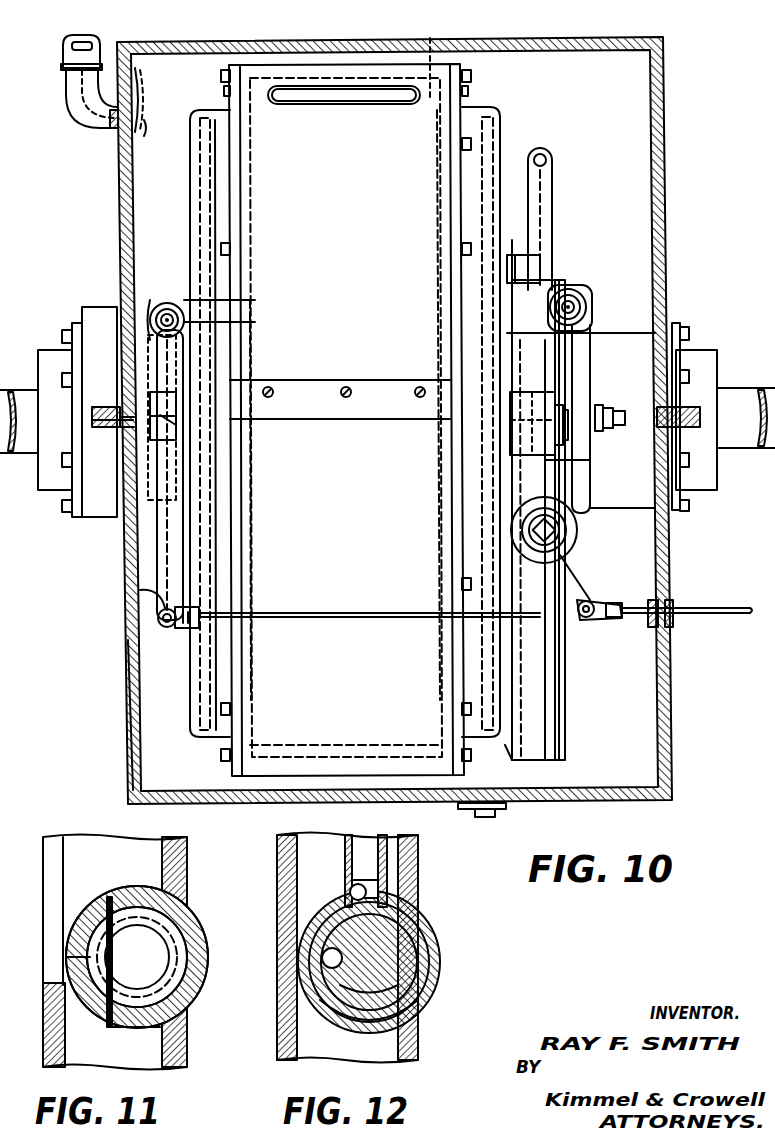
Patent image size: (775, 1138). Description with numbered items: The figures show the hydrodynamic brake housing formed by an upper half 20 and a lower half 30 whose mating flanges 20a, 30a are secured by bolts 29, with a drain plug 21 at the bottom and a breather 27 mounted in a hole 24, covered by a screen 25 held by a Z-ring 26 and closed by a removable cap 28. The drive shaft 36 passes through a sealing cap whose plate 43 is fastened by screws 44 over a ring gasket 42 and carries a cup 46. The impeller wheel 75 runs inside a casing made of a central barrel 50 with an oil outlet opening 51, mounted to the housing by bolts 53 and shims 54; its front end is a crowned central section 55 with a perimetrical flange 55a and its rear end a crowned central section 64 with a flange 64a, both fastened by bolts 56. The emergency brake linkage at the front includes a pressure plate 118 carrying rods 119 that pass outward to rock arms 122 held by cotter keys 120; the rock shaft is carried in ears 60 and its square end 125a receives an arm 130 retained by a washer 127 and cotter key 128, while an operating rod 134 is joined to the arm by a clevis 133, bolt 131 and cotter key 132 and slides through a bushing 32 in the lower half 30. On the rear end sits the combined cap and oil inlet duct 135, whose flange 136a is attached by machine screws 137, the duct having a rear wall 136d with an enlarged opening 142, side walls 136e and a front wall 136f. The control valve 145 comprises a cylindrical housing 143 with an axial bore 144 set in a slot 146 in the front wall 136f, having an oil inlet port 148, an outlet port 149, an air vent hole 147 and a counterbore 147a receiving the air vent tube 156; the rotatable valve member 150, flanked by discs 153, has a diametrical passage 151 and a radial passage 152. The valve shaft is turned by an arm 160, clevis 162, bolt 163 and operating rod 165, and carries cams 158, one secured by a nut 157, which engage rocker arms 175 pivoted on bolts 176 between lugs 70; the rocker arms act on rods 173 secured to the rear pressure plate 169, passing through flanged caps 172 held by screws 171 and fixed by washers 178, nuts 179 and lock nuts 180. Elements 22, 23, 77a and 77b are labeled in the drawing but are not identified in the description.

In FIG. 10, the upper half of housing 20 is at (118, 185).
In FIG. 10, the mating flange 20a is at (715, 390).
In FIG. 10, the plug 21 is at (520, 816).
In FIG. 10, the mounting plate 22 is at (97, 310).
In FIG. 10, the mounting plate 23 is at (612, 347).
In FIG. 10, the hole 24 is at (110, 126).
In FIG. 10, the screen 25 is at (151, 142).
In FIG. 10, the Z-ring 26 is at (138, 75).
In FIG. 10, the breather 27 is at (66, 99).
In FIG. 10, the cap 28 is at (62, 50).
In FIG. 10, the bolts 29 is at (106, 405).
In FIG. 10, the lower half of housing 30 is at (130, 703).
In FIG. 10, the mating flange 30a is at (120, 430).
In FIG. 10, the bushing 32 is at (672, 603).
In FIG. 10, the drive shaft 36 is at (22, 463).
In FIG. 10, the ring gasket 42 is at (73, 323).
In FIG. 10, the plate 43 is at (63, 333).
In FIG. 10, the screws 44 is at (63, 340).
In FIG. 10, the cup 46 is at (40, 358).
In FIG. 10, the central barrel 50 is at (352, 62).
In FIG. 10, the oil outlet opening 51 is at (372, 100).
In FIG. 10, the bolts 53 is at (348, 380).
In FIG. 10, the shims 54 is at (372, 412).
In FIG. 10, the crowned central section 55 is at (194, 205).
In FIG. 10, the perimetrical flange 55a is at (224, 92).
In FIG. 10, the bolts 56 is at (222, 76).
In FIG. 10, the ears 60 is at (185, 270).
In FIG. 10, the crowned central section 64 is at (500, 140).
In FIG. 10, the perimetrical flange 64a is at (470, 92).
In FIG. 10, the lugs 70 is at (582, 283).
In FIG. 10, the impeller wheel 75 is at (445, 57).
In FIG. 10, the guide 77a is at (440, 664).
In FIG. 10, the guide 77b is at (252, 662).
In FIG. 10, the pressure plate 118 is at (207, 663).
In FIG. 10, the rods 119 is at (185, 432).
In FIG. 10, the cotter keys 120 is at (140, 478).
In FIG. 10, the rock arms 122 is at (150, 370).
In FIG. 10, the square end 125a is at (255, 322).
In FIG. 10, the washer 127 is at (268, 295).
In FIG. 10, the cotter key 128 is at (170, 303).
In FIG. 10, the arm 130 is at (157, 553).
In FIG. 10, the bolt 131 is at (160, 620).
In FIG. 10, the cotter key 132 is at (130, 590).
In FIG. 10, the clevis 133 is at (185, 630).
In FIG. 10, the operating rod 134 is at (335, 612).
In FIG. 10, the combined cap and oil inlet duct 135 is at (555, 740).
In FIG. 10, the flange 136a is at (520, 250).
In FIG. 10, the rear wall 136d is at (500, 764).
In FIG. 11, the rear wall 136d is at (44, 1020).
In FIG. 12, the rear wall 136d is at (282, 1045).
In FIG. 10, the side walls 136e is at (548, 718).
In FIG. 10, the front wall 136f is at (568, 692).
In FIG. 11, the front wall 136f is at (180, 1040).
In FIG. 12, the front wall 136f is at (418, 1040).
In FIG. 10, the machine screws 137 is at (530, 263).
In FIG. 11, the opening 142 is at (44, 860).
In FIG. 12, the opening 142 is at (278, 845).
In FIG. 10, the valve housing 143 is at (575, 515).
In FIG. 11, the valve housing 143 is at (195, 993).
In FIG. 12, the valve housing 143 is at (425, 995).
In FIG. 11, the axial bore 144 is at (200, 925).
In FIG. 12, the axial bore 144 is at (440, 955).
In FIG. 12, the control valve 145 is at (440, 938).
In FIG. 11, the slot 146 is at (190, 903).
In FIG. 12, the slot 146 is at (422, 920).
In FIG. 12, the radial hole 147 is at (350, 888).
In FIG. 12, the counterbore 147a is at (380, 888).
In FIG. 11, the oil inlet port 148 is at (125, 1030).
In FIG. 11, the oil outlet port 149 is at (145, 897).
In FIG. 10, the rotatable valve member 150 is at (565, 545).
In FIG. 11, the rotatable valve member 150 is at (100, 905).
In FIG. 12, the rotatable valve member 150 is at (430, 975).
In FIG. 11, the passage 151 is at (118, 893).
In FIG. 11, the passage 152 is at (66, 945).
In FIG. 12, the passage 152 is at (322, 955).
In FIG. 10, the discs 153 is at (568, 530).
In FIG. 10, the air vent tube 156 is at (548, 152).
In FIG. 12, the air vent tube 156 is at (345, 855).
In FIG. 10, the nut 157 is at (575, 560).
In FIG. 10, the cams 158 is at (560, 492).
In FIG. 10, the arm 160 is at (588, 585).
In FIG. 10, the clevis 162 is at (595, 622).
In FIG. 10, the bolt 163 is at (586, 617).
In FIG. 10, the operating rod 165 is at (622, 615).
In FIG. 10, the annular pressure plate 169 is at (535, 690).
In FIG. 10, the screws 171 is at (560, 470).
In FIG. 10, the flanged caps 172 is at (568, 455).
In FIG. 10, the rods 173 is at (563, 440).
In FIG. 10, the rocker arms 175 is at (592, 340).
In FIG. 10, the bolts 176 is at (584, 298).
In FIG. 10, the washers 178 is at (600, 405).
In FIG. 10, the nuts 179 is at (610, 408).
In FIG. 10, the lock nuts 180 is at (628, 407).